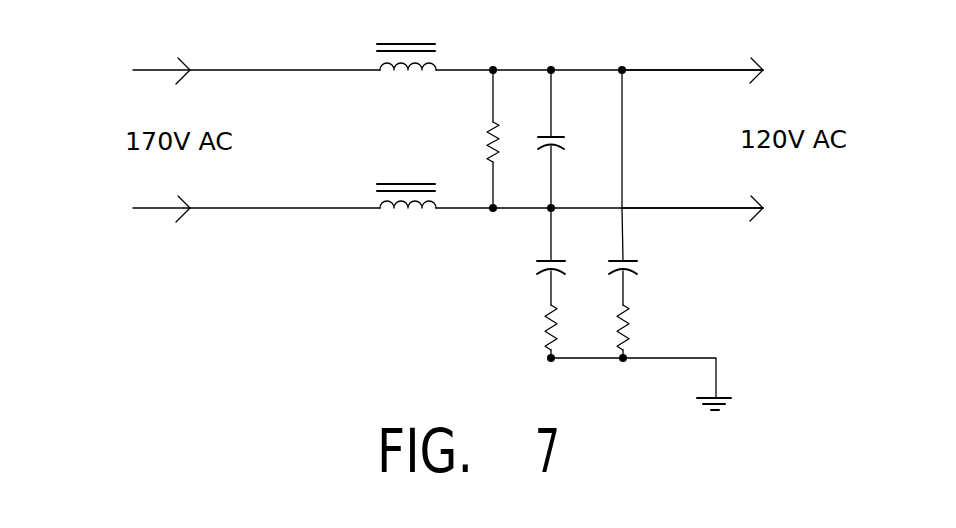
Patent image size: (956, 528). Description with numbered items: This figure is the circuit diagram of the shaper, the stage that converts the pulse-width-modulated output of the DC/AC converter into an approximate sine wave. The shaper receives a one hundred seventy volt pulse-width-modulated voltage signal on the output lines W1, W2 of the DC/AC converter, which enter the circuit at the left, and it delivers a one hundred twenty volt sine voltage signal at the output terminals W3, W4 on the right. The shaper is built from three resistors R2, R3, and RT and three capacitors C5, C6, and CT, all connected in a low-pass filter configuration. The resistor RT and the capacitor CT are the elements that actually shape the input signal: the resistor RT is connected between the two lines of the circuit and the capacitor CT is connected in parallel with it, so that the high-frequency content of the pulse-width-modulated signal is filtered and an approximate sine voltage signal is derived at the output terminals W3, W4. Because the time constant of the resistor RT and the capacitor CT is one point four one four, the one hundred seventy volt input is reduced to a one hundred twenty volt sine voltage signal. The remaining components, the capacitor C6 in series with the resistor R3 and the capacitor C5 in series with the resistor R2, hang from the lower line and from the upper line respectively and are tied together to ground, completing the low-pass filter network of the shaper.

The output line W1 is at (448, 79).
The output line W2 is at (448, 219).
The output terminal W3 is at (718, 66).
The output terminal W4 is at (718, 207).
The resistor RT is at (474, 139).
The capacitor CT is at (567, 139).
The capacitor C6 is at (531, 256).
The capacitor C5 is at (610, 256).
The resistor R3 is at (527, 331).
The resistor R2 is at (608, 331).